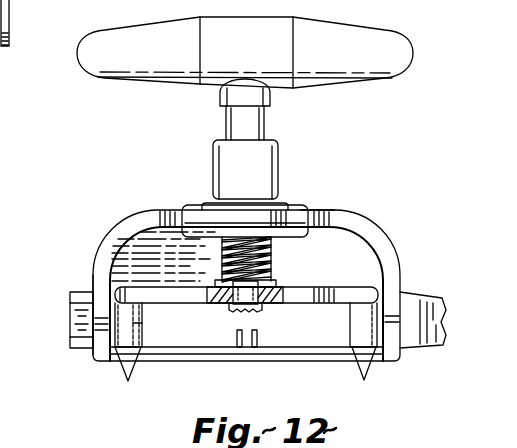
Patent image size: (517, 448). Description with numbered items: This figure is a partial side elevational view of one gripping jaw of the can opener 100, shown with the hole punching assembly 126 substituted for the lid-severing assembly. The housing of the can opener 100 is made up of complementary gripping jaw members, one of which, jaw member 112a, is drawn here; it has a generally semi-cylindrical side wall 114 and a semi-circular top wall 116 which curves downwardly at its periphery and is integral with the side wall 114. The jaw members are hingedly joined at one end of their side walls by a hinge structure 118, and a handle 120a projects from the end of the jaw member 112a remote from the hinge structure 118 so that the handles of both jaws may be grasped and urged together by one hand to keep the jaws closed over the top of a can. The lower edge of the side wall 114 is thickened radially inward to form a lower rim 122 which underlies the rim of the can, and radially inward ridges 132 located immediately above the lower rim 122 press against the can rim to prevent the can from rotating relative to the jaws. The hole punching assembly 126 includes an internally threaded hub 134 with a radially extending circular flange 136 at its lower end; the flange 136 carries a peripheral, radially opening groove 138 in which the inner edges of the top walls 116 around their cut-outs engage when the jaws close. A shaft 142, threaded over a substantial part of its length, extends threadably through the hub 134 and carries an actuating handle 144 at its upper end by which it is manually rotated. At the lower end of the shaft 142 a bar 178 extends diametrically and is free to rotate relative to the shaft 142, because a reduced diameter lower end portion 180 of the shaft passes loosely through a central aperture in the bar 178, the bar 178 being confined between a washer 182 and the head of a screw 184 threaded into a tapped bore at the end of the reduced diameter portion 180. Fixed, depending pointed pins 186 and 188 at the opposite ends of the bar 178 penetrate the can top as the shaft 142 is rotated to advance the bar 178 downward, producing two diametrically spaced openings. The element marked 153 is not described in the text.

The can opener 100 is at (120, 136).
The gripping jaw member 112a is at (112, 218).
The side wall 114 is at (95, 268).
The top wall 116 is at (328, 213).
The hinge structure 118 is at (70, 326).
The handle 120a is at (415, 343).
The lower rim 122 is at (113, 362).
The hole punching assembly 126 is at (360, 130).
The ridges 132 is at (236, 350).
The hub 134 is at (279, 163).
The flange 136 is at (288, 206).
The groove 138 is at (215, 218).
The shaft 142 is at (271, 253).
The actuating handle 144 is at (326, 26).
The adjacent element 153 is at (10, 24).
The bar 178 is at (318, 288).
The reduced diameter lower end portion 180 is at (237, 306).
The washer 182 is at (222, 284).
The screw 184 is at (256, 310).
The pointed pin 186 is at (141, 323).
The pointed pin 188 is at (350, 342).